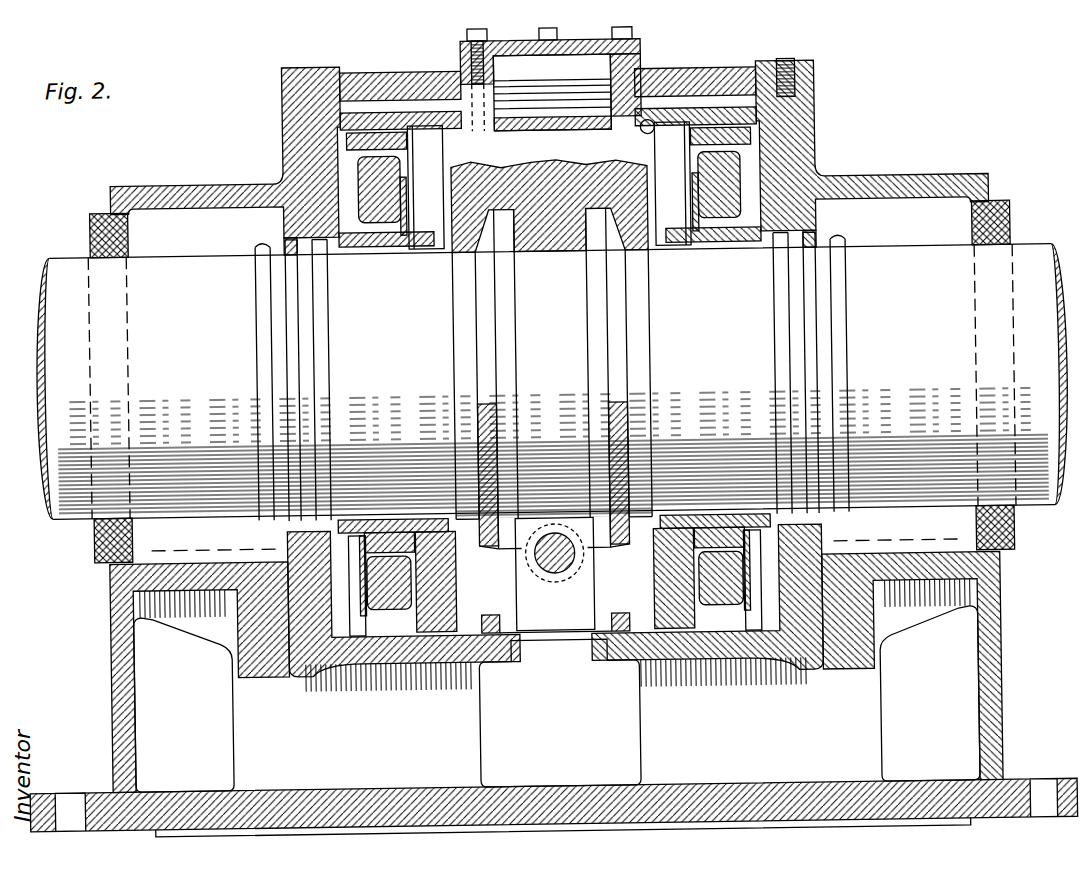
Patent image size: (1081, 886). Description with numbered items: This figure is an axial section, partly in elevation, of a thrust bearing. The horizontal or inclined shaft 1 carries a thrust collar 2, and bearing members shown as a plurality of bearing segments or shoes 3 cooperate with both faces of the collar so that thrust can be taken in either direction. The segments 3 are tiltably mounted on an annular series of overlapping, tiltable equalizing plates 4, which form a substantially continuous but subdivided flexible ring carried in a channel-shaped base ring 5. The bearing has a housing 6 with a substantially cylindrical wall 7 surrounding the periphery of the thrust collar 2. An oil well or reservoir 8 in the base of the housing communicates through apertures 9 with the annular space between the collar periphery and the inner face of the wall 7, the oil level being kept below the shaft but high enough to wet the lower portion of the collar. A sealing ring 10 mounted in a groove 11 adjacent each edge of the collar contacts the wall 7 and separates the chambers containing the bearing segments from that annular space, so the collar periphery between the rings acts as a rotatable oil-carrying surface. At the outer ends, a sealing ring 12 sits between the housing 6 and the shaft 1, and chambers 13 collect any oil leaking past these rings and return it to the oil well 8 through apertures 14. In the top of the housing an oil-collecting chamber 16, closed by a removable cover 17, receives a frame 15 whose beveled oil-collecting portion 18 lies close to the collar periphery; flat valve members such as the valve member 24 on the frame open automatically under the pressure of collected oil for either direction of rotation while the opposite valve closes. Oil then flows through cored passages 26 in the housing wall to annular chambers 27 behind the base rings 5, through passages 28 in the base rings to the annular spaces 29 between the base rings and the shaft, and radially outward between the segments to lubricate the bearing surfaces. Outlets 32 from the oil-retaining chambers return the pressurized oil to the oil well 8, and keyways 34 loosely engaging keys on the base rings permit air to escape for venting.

The shaft 1 is at (73, 493).
The thrust collar 2 is at (568, 230).
The bearing segments or shoes 3 is at (434, 232).
The equalizing plates 4 is at (358, 229).
The channel-shaped base ring 5 is at (336, 241).
The housing 6 is at (551, 347).
The cylindrical wall 7 is at (552, 377).
The oil well or reservoir 8 is at (146, 662).
The apertures 9 is at (541, 645).
The sealing ring 10 is at (477, 642).
The groove 11 is at (627, 613).
The sealing ring 12 is at (286, 496).
The chambers 13 is at (150, 214).
The apertures 14 is at (184, 575).
The frame 15 is at (552, 118).
The oil-collecting chamber 16 is at (650, 111).
The removable cover 17 is at (515, 48).
The oil-collecting portion 18 is at (589, 122).
The flat valve member 24 is at (542, 100).
The cored passages 26 is at (384, 98).
The annular chambers 27 is at (331, 125).
The passages 28 is at (291, 204).
The annular spaces 29 is at (395, 248).
The outlets 32 is at (450, 108).
The keyways 34 is at (654, 136).